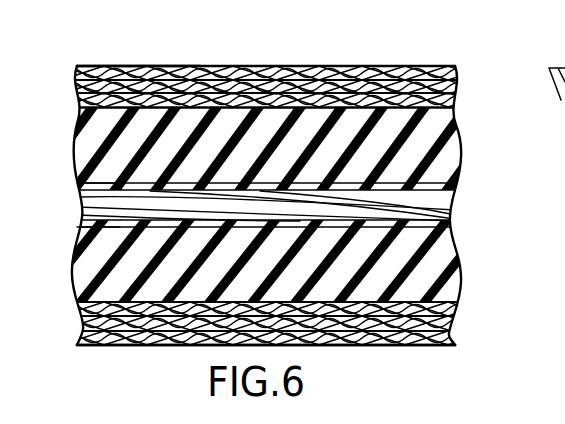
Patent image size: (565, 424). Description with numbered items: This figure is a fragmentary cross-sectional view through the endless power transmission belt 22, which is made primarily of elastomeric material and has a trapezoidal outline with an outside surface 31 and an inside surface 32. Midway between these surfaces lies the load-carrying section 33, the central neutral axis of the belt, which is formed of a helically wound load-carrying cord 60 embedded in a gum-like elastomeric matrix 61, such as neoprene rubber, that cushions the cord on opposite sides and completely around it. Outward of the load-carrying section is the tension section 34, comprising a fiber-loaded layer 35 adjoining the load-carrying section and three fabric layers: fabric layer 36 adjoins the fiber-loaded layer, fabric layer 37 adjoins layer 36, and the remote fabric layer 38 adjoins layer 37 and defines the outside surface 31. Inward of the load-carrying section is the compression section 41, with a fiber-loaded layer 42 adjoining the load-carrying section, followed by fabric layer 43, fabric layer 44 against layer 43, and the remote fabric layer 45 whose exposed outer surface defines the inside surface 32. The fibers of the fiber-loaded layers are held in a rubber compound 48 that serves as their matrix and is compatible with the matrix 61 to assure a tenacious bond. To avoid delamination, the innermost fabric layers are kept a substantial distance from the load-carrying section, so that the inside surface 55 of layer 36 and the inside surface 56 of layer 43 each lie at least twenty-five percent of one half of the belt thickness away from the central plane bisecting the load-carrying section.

The belt 22 is at (393, 42).
The outside surface 31 is at (198, 66).
The inside surface 32 is at (164, 346).
The load-carrying section 33 is at (458, 202).
The tension section 34 is at (463, 110).
The fiber-loaded layer 35 is at (455, 140).
The fabric layer 36 is at (83, 100).
The fabric layer 37 is at (456, 70).
The fabric layer 38 is at (77, 66).
The compression section 41 is at (465, 267).
The fiber-loaded layer 42 is at (72, 269).
The fabric layer 43 is at (458, 311).
The fabric layer 44 is at (455, 324).
The fabric layer 45 is at (456, 336).
The rubber compound 48 is at (85, 147).
The inside surface 55 is at (436, 112).
The inside surface 56 is at (453, 298).
The load-carrying cord 60 is at (416, 206).
The elastomeric matrix 61 is at (450, 226).